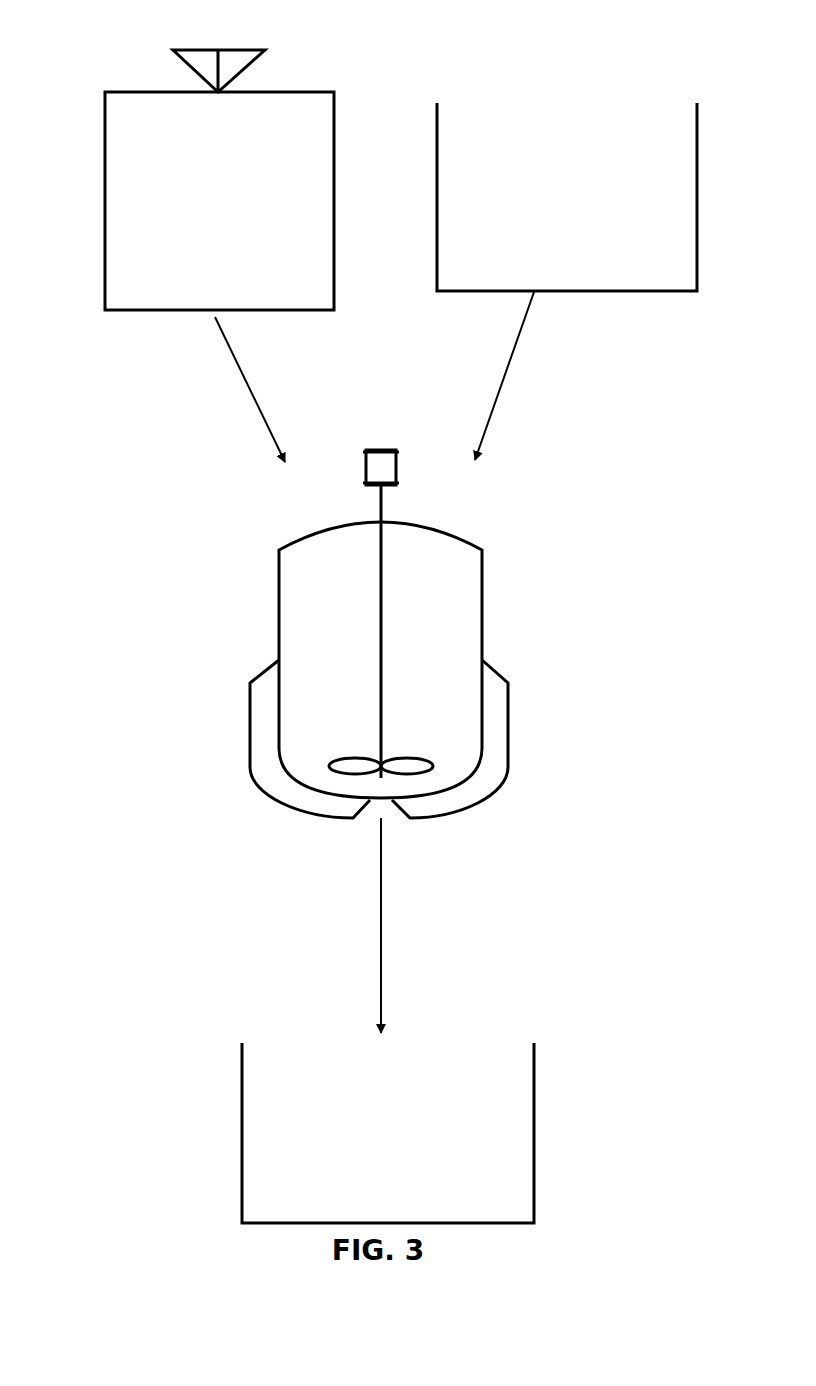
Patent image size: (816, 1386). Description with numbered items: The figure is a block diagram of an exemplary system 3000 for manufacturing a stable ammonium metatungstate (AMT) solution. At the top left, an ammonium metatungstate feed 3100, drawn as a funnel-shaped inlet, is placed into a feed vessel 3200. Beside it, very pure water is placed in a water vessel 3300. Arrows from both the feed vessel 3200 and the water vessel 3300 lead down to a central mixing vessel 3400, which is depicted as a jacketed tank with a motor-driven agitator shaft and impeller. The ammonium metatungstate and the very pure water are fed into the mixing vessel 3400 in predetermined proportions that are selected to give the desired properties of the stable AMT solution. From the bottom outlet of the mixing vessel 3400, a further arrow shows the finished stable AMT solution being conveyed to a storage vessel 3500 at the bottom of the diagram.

The system 3000 is at (97, 55).
The ammonium metatungstate feed 3100 is at (219, 54).
The feed vessel 3200 is at (219, 277).
The water vessel 3300 is at (567, 281).
The mixing vessel 3400 is at (379, 741).
The storage vessel 3500 is at (388, 1133).